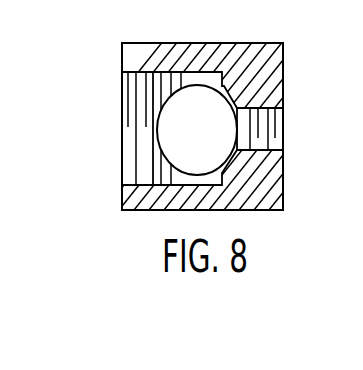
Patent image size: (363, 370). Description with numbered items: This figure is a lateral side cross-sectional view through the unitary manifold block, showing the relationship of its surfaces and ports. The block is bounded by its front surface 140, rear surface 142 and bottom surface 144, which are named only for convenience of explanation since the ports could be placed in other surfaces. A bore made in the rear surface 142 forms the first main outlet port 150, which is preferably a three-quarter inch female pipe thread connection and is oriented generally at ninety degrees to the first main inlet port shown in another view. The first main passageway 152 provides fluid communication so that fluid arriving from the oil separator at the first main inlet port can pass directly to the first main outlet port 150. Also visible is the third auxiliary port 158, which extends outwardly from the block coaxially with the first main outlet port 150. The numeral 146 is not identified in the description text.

The front surface 140 is at (283, 176).
The rear surface 142 is at (122, 67).
The bottom surface 144 is at (246, 43).
The bottom corner of housing 146 is at (266, 212).
The first main outlet port 150 is at (132, 182).
The first main passageway 152 is at (212, 141).
The third auxiliary port 158 is at (283, 148).